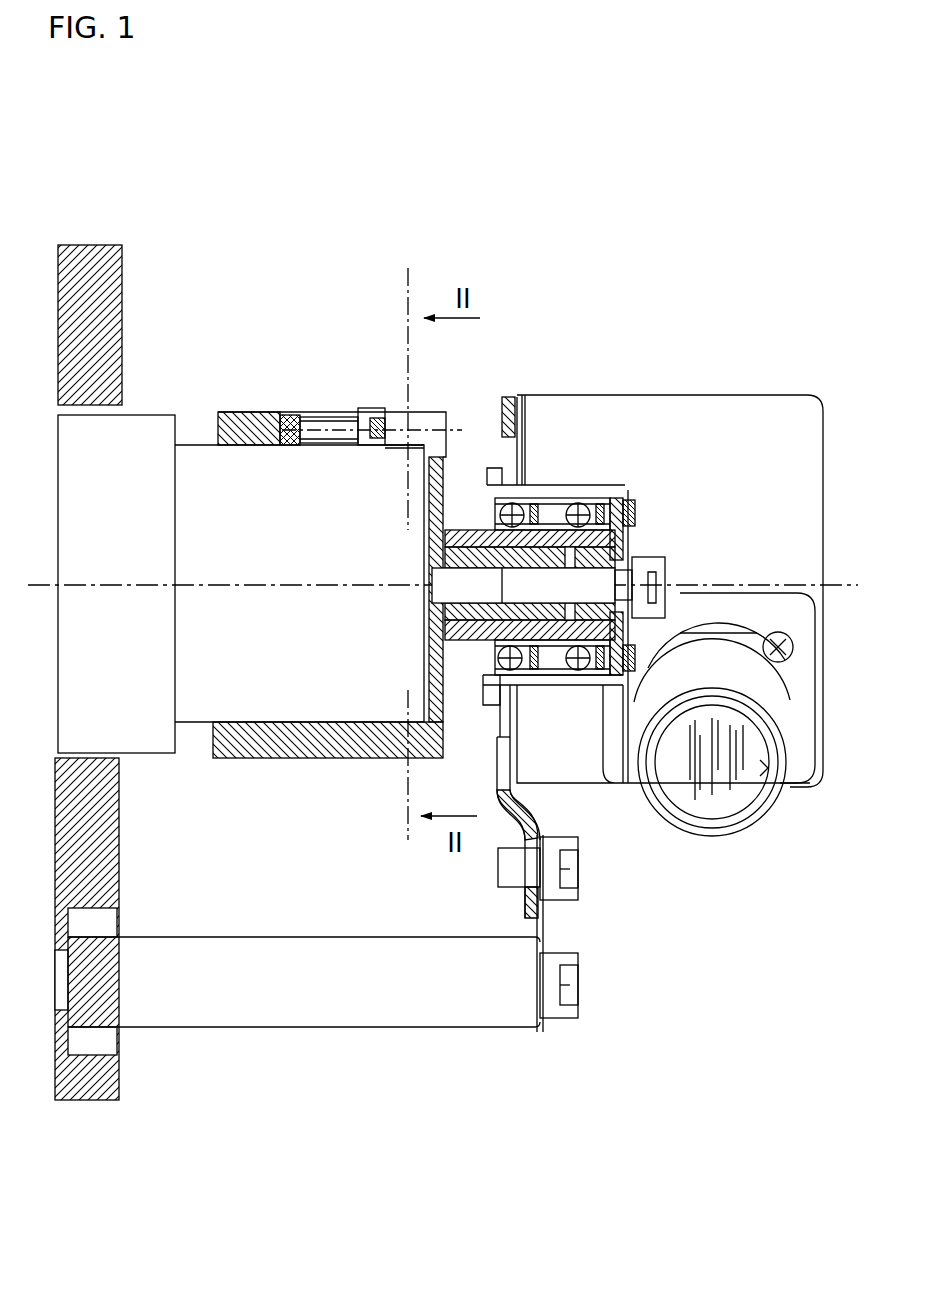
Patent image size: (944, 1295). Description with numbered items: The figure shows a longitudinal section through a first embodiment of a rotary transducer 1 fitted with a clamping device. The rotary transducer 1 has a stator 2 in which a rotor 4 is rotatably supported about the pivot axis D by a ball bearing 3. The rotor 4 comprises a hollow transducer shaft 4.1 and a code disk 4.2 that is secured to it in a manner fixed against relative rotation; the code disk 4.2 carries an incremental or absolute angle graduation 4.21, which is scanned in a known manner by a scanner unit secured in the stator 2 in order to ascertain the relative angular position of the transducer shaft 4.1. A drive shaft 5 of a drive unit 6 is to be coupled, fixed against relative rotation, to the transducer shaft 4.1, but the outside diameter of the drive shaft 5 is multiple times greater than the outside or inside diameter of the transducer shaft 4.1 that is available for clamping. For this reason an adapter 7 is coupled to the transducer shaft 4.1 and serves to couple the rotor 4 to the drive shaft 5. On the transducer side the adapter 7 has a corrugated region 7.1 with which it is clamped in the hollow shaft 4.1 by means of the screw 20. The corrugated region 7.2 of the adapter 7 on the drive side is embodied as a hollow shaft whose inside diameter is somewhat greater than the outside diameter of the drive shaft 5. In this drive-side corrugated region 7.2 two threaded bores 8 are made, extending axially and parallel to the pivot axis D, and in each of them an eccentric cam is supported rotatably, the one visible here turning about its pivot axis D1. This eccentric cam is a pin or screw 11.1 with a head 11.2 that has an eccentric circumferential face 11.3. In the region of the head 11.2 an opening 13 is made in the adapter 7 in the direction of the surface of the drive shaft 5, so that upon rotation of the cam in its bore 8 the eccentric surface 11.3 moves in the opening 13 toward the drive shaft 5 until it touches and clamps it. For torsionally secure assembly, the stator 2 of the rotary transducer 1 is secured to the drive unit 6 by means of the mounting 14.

The rotary transducer 1 is at (787, 458).
The stator 2 is at (528, 492).
The ball bearing 3 is at (597, 507).
The rotor 4 is at (548, 520).
The hollow transducer shaft 4.1 is at (455, 540).
The code disk 4.2 is at (633, 500).
The angle graduation 4.21 is at (646, 515).
The drive shaft 5 is at (205, 460).
The drive unit 6 is at (105, 282).
The adapter 7 is at (230, 393).
The corrugated region on the transducer side 7.1 is at (435, 622).
The corrugated region on the drive side 7.2 is at (290, 748).
The threaded bores 8 is at (268, 422).
The pin or screw 11.1 is at (290, 446).
The head 11.2 is at (352, 446).
The eccentric circumferential face 11.3 is at (368, 396).
The opening 13 is at (398, 446).
The mounting 14 is at (303, 998).
The screw 20 is at (655, 575).
The pivot axis D is at (852, 590).
The pivot axis of eccentric cam D1 is at (460, 425).